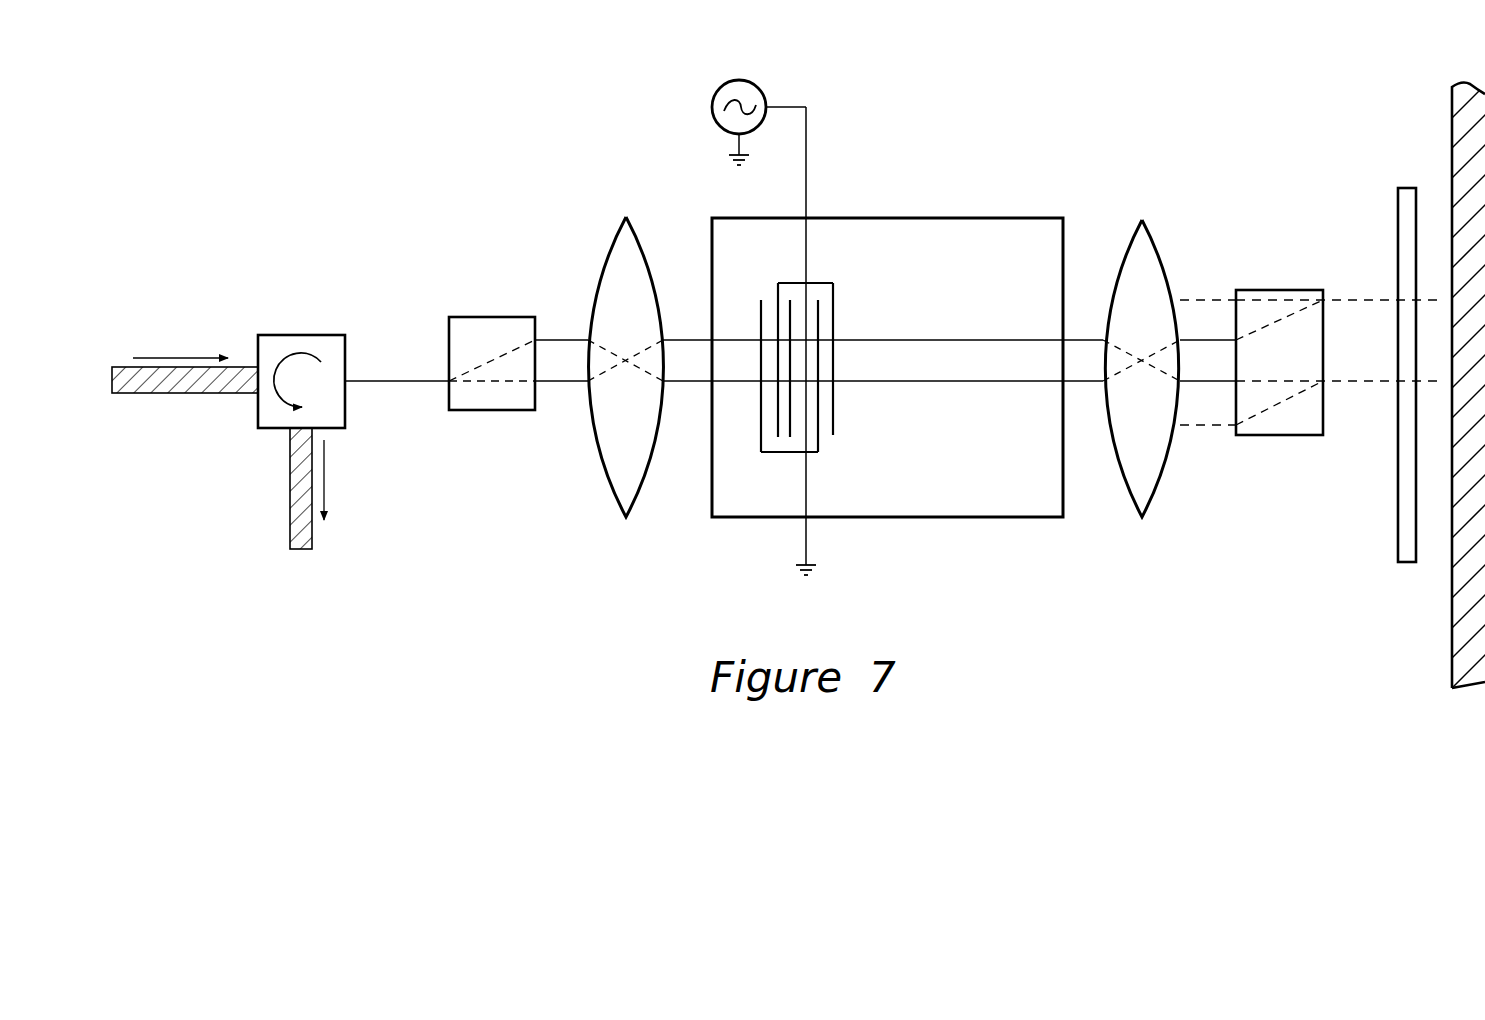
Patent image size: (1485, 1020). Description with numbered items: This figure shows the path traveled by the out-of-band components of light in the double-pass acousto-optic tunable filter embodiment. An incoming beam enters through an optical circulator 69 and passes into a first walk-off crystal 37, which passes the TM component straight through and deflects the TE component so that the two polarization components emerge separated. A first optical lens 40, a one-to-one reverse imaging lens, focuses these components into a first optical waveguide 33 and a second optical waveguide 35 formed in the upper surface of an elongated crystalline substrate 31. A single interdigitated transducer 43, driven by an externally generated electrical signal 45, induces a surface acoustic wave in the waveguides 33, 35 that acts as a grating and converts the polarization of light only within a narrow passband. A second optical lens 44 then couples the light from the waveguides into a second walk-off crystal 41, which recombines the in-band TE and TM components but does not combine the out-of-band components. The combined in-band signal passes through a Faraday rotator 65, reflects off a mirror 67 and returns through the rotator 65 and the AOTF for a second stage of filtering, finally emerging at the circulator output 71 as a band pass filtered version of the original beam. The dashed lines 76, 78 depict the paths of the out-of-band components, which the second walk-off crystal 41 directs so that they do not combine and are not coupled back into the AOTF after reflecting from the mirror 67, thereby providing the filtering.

The crystalline substrate 31 is at (862, 522).
The first optical waveguide 33 is at (860, 337).
The second optical waveguide 35 is at (863, 388).
The first walk-off crystal 37 is at (470, 327).
The first optical lens 40 is at (620, 250).
The second walk-off crystal 41 is at (1280, 420).
The interdigitated transducer 43 is at (817, 292).
The second optical lens 44 is at (1145, 262).
The electrical signal 45 is at (716, 92).
The 45° Faraday rotator 65 is at (1398, 190).
The mirror 67 is at (1452, 100).
The optical circulator 69 is at (273, 345).
The circulator output 71 is at (283, 442).
The dashed line 76 is at (1357, 300).
The dashed line 78 is at (1355, 392).